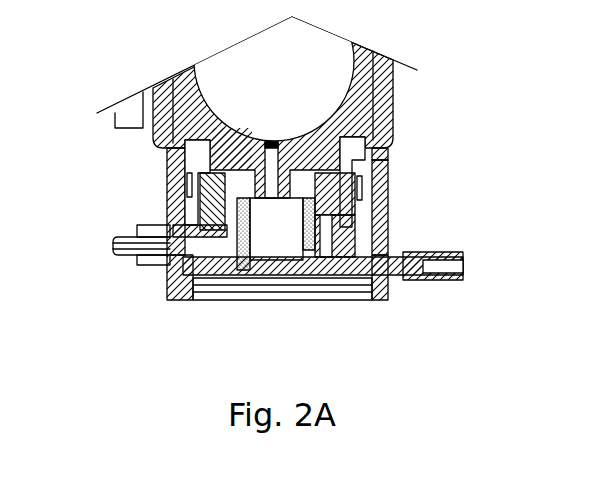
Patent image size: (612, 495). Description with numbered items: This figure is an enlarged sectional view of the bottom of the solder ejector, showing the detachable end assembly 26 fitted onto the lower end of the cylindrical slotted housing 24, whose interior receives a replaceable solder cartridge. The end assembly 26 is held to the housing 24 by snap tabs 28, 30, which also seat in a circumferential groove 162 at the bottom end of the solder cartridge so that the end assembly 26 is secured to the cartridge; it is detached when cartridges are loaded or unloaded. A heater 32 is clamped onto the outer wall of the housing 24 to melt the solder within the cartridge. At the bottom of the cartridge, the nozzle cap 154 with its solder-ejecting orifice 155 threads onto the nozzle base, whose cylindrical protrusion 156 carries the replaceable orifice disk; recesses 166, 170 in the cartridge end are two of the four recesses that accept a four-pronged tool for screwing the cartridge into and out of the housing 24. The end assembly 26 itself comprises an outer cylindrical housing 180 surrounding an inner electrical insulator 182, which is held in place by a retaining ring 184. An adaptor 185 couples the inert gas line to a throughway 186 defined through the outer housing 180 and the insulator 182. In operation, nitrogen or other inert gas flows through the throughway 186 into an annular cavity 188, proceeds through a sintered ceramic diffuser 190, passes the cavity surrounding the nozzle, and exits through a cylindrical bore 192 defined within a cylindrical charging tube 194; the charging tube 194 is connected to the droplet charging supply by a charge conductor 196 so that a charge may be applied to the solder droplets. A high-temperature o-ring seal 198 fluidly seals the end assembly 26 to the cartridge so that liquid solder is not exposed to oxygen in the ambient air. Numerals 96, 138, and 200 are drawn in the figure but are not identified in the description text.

The cylindrical slotted housing 24 is at (383, 43).
The detachable end assembly 26 is at (436, 108).
The snap tab 28 is at (170, 157).
The snap tab 30 is at (386, 168).
The heater 32 is at (115, 128).
The inlet tube 96 is at (127, 258).
The ball chamber 138 is at (274, 70).
The nozzle cap 154 is at (197, 183).
The solder-ejecting orifice 155 is at (276, 234).
The cylindrical protrusion 156 is at (216, 201).
The circumferential groove 162 is at (386, 153).
The recess 166 is at (336, 131).
The recess 170 is at (196, 80).
The outer cylindrical housing 180 is at (395, 256).
The inner electrical insulator 182 is at (210, 288).
The retaining ring 184 is at (355, 300).
The adaptor 185 is at (143, 223).
The throughway 186 is at (165, 225).
The annular cavity 188 is at (300, 176).
The sintered ceramic diffuser 190 is at (340, 209).
The cylindrical bore 192 is at (276, 229).
The cylindrical charging tube 194 is at (287, 266).
The charge conductor 196 is at (413, 280).
The high-temperature o-ring seal 198 is at (216, 131).
The plunger 200 is at (256, 139).